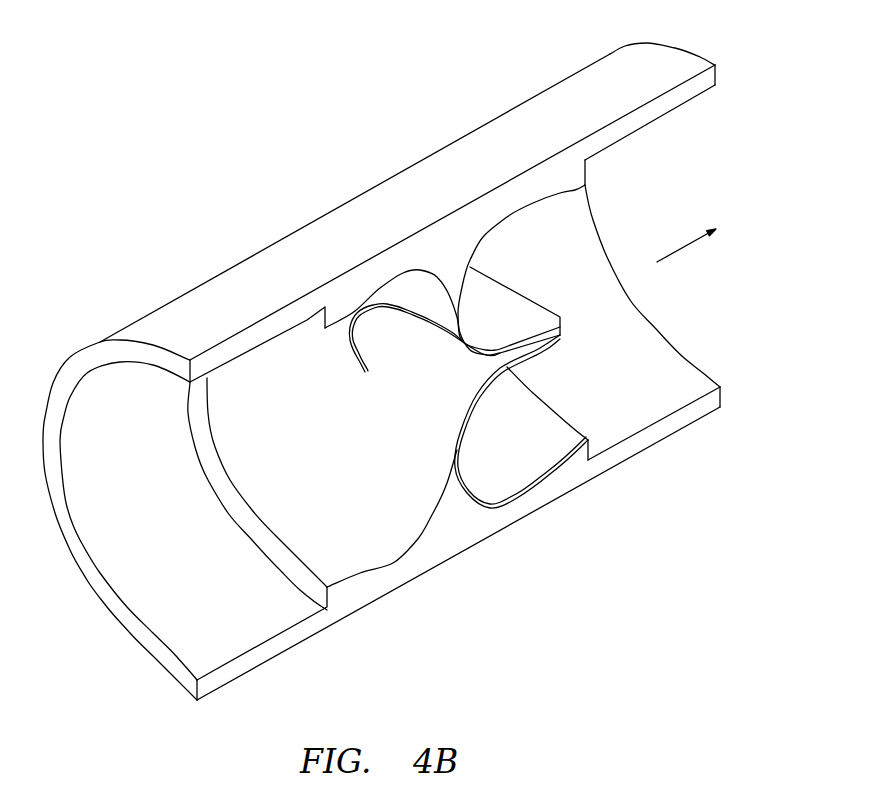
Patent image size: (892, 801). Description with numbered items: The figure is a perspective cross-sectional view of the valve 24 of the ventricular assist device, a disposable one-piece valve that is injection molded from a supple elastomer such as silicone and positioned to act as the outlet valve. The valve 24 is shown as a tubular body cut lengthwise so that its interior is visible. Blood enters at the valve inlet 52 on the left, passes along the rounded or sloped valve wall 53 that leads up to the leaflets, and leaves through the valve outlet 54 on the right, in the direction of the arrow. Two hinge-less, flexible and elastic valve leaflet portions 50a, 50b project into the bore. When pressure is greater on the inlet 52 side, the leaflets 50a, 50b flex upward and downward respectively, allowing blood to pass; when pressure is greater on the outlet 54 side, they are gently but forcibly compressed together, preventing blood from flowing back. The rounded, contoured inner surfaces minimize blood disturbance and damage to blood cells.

The valve 24 is at (396, 628).
The valve inlet 52 is at (135, 581).
The valve wall 53 is at (401, 433).
The valve outlet 54 is at (597, 350).
The valve leaflet portion 50a is at (517, 303).
The valve leaflet portion 50b is at (537, 350).